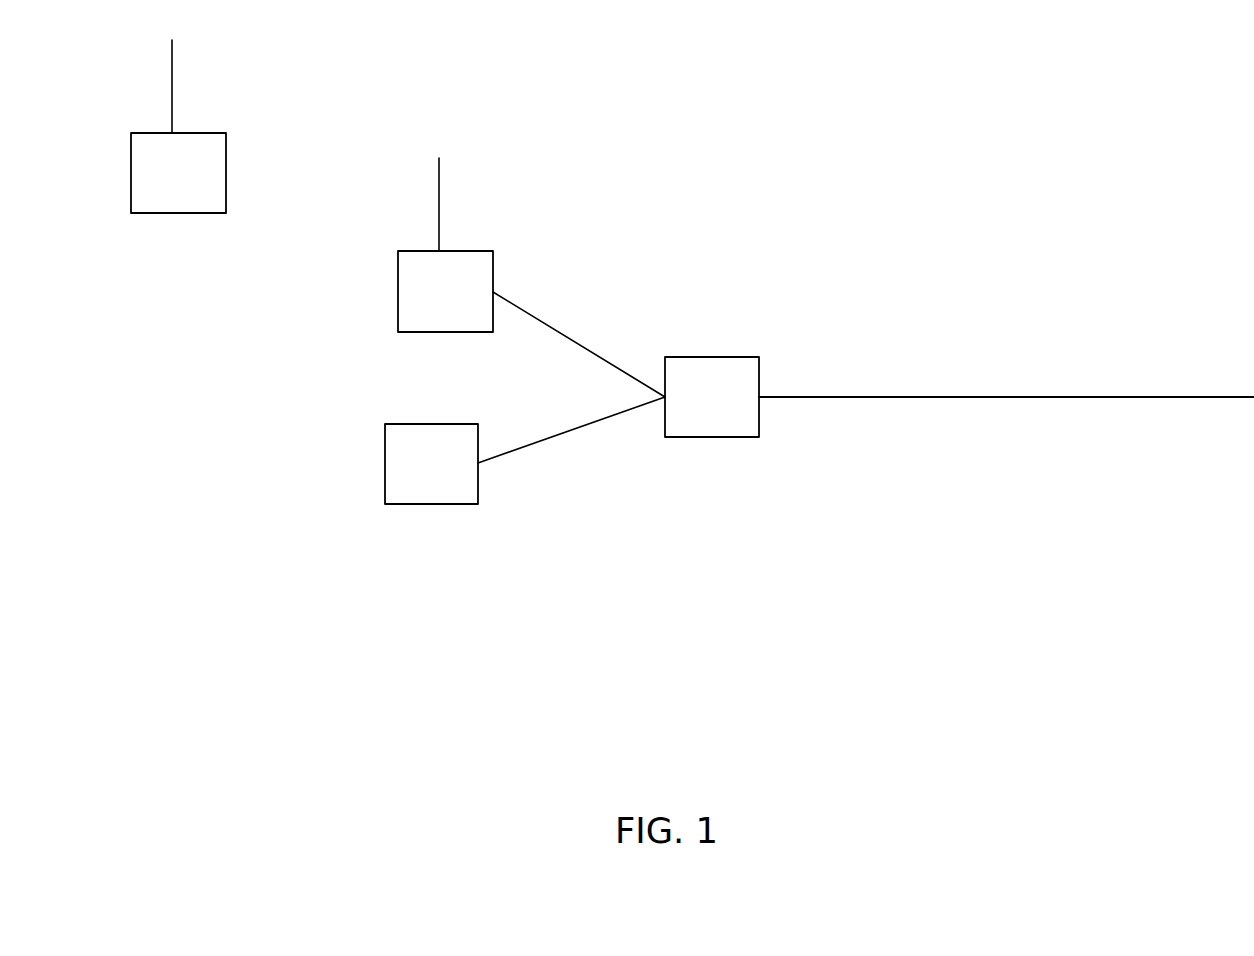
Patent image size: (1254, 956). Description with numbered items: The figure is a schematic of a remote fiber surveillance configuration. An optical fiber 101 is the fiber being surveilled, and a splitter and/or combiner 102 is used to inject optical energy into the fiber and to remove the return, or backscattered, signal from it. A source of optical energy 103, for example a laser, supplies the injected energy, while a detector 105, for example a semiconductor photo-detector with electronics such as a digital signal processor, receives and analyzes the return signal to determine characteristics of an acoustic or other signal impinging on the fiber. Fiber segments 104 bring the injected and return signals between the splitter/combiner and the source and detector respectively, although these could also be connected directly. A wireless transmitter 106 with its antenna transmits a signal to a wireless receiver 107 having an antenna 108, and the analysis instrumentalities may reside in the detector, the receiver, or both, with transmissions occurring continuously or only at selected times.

The optical fiber 101 is at (1012, 397).
The splitter and/or combiner 102 is at (743, 437).
The source of optical energy 103 is at (423, 504).
The fiber segments 104 is at (572, 330).
The detector 105 is at (466, 251).
The wireless transmitter 106 is at (439, 201).
The wireless receiver 107 is at (226, 170).
The antenna 108 is at (172, 67).